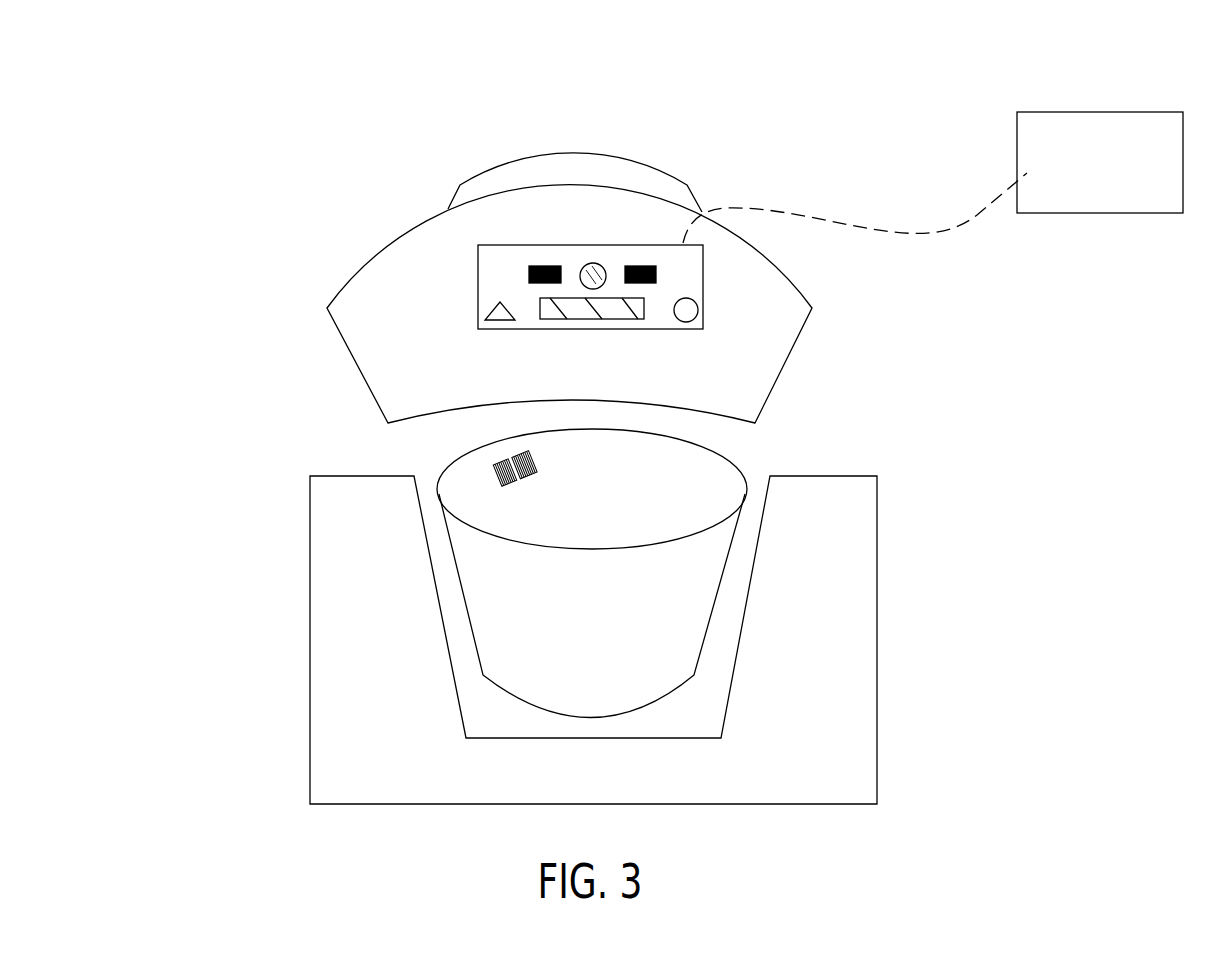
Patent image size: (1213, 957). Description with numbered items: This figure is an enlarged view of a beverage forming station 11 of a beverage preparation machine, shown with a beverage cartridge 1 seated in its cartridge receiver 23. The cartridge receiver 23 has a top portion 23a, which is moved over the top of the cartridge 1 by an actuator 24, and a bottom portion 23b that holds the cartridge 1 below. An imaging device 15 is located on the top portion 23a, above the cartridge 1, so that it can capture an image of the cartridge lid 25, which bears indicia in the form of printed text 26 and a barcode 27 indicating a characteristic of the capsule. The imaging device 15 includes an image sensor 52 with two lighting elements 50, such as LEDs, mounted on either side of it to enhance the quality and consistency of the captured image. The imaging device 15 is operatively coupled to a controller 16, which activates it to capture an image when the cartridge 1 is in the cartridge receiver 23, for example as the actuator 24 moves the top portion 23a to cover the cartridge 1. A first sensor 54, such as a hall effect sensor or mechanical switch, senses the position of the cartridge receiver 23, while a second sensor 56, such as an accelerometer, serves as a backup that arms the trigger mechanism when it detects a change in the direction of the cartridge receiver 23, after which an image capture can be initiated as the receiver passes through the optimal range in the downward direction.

The beverage cartridge 1 is at (699, 595).
The beverage forming station 11 is at (222, 92).
The imaging device 15 is at (477, 244).
The controller 16 is at (1042, 111).
The cartridge receiver 23 is at (102, 425).
The top portion of the cartridge receiver 23a is at (352, 312).
The bottom portion of the cartridge receiver 23b is at (325, 533).
The actuator 24 is at (553, 177).
The lid 25 is at (503, 505).
The text 26 is at (568, 513).
The barcode 27 is at (493, 466).
The lighting elements 50 is at (657, 265).
The image sensor 52 is at (594, 263).
The first sensor 54 is at (698, 314).
The second sensor 56 is at (487, 319).